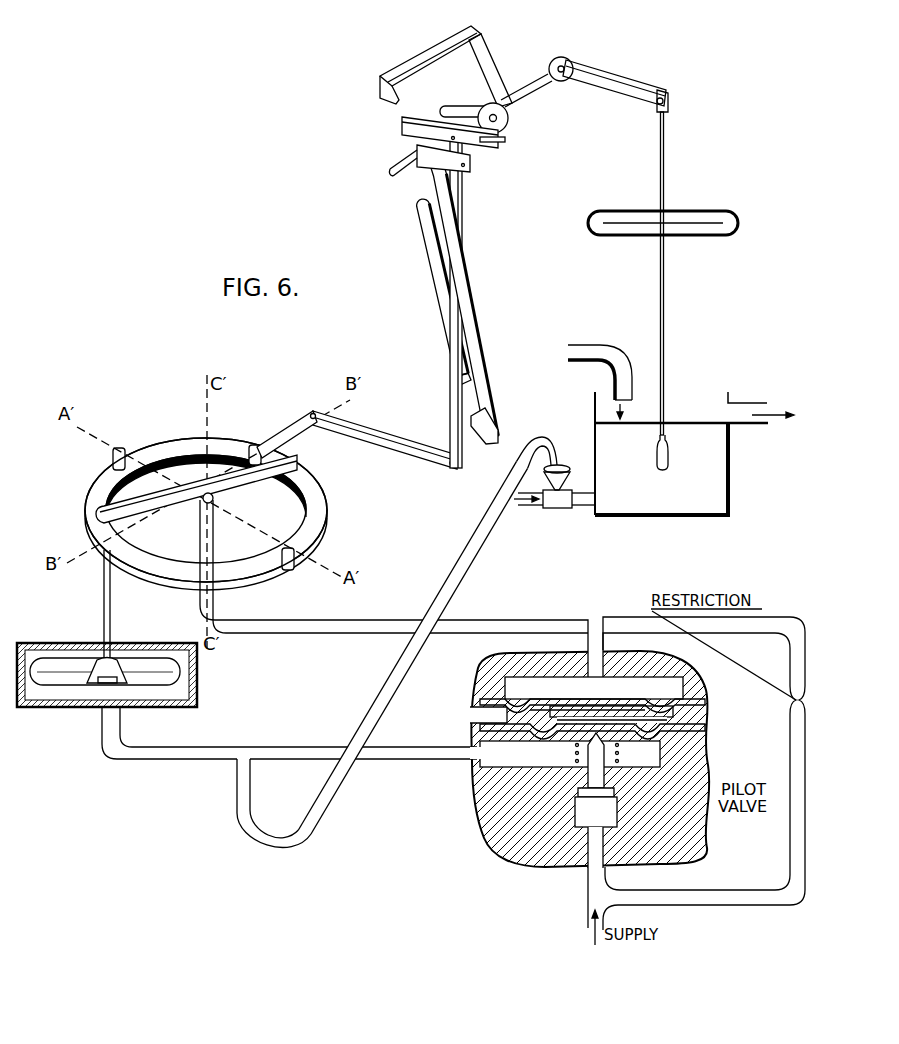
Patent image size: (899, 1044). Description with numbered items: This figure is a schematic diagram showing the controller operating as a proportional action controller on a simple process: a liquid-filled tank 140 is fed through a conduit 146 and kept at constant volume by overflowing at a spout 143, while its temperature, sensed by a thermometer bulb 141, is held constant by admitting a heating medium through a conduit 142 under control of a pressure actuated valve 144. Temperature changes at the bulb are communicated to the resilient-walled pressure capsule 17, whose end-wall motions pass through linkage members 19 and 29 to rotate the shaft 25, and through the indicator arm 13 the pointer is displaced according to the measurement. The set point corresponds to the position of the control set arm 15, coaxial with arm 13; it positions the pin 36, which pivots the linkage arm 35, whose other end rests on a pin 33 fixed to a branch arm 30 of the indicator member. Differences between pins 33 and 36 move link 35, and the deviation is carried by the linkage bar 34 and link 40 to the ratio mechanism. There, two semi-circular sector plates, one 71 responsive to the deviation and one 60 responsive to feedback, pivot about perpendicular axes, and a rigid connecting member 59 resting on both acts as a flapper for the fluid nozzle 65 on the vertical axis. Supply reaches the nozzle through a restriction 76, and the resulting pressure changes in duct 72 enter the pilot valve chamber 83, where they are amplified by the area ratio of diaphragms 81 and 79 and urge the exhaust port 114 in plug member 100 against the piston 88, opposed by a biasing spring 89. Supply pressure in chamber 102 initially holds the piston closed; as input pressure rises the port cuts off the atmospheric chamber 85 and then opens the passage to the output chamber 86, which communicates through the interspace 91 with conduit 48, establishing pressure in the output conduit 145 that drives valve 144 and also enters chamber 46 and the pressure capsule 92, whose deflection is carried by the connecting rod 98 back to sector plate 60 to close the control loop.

The indicator arm 13 is at (426, 55).
The control set arm 15 is at (467, 330).
The pressure capsule 17 is at (709, 220).
The linkage member 19 is at (664, 170).
The shaft 25 is at (530, 93).
The linkage member 29 is at (647, 93).
The branch arm 30 is at (466, 108).
The pin 33 is at (441, 117).
The linkage bar 34 is at (463, 205).
The linkage arm 35 is at (492, 139).
The pin 36 is at (472, 167).
The link 40 is at (383, 438).
The chamber 46 is at (56, 707).
The conduit 48 is at (318, 792).
The connecting member 59 is at (187, 487).
The sector plate 60 is at (143, 568).
The fluid nozzle 65 is at (210, 516).
The sector plate 71 is at (318, 500).
The duct 72 is at (295, 623).
The restriction 76 is at (797, 706).
The diaphragm 79 is at (697, 735).
The diaphragm 81 is at (706, 699).
The pilot valve chamber 83 is at (672, 695).
The atmospheric chamber 85 is at (517, 713).
The output chamber 86 is at (540, 763).
The piston 88 is at (574, 743).
The biasing spring 89 is at (619, 756).
The extended interspace 91 is at (158, 755).
The pressure capsule 92 is at (157, 680).
The rod 98 is at (110, 622).
The plug member 100 is at (625, 712).
The chamber 102 is at (585, 822).
The exhaust port 114 is at (593, 722).
The tank 140 is at (728, 392).
The thermometer bulb 141 is at (668, 441).
The conduit 142 is at (584, 508).
The spout 143 is at (749, 419).
The pressure actuated valve 144 is at (572, 461).
The output conduit 145 is at (538, 441).
The conduit 146 is at (588, 351).